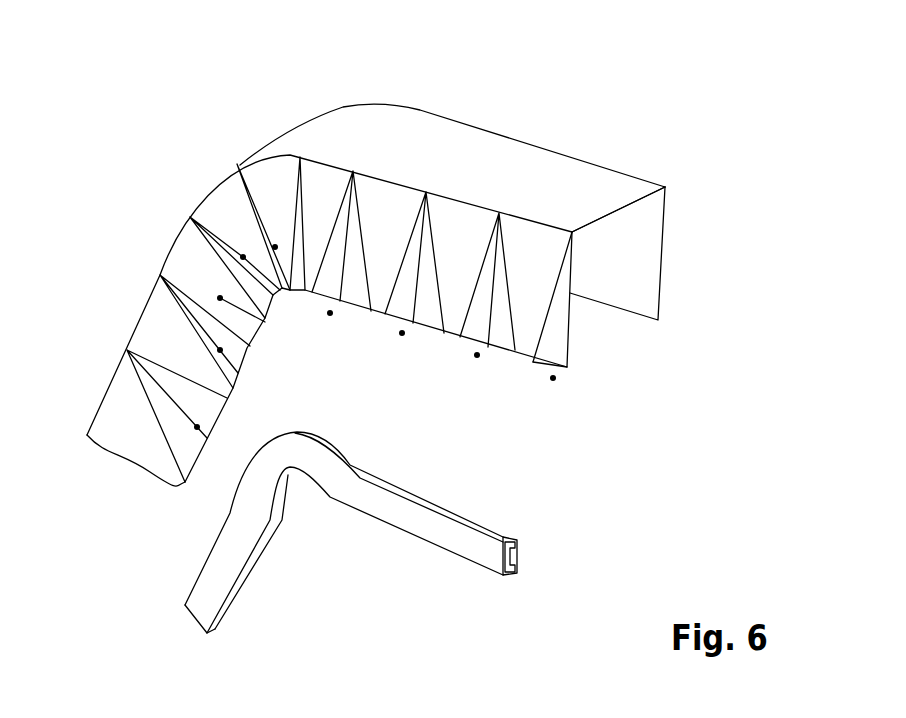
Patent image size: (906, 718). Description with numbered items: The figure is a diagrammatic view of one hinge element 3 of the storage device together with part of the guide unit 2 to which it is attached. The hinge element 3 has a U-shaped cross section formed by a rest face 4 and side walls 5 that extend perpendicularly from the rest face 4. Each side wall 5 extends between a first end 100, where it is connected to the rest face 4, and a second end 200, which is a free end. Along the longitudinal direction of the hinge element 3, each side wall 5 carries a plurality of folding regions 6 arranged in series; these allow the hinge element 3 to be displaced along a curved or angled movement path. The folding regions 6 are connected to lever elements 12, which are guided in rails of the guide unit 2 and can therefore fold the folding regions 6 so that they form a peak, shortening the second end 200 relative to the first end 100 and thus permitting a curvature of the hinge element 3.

The guide unit 2 is at (435, 537).
The hinge element 3 is at (122, 143).
The rest face 4 is at (568, 180).
The side wall 5 is at (665, 245).
The folding region 6 is at (247, 168).
The lever element 12 is at (197, 427).
The first end 100 is at (576, 211).
The second end 200 is at (519, 376).